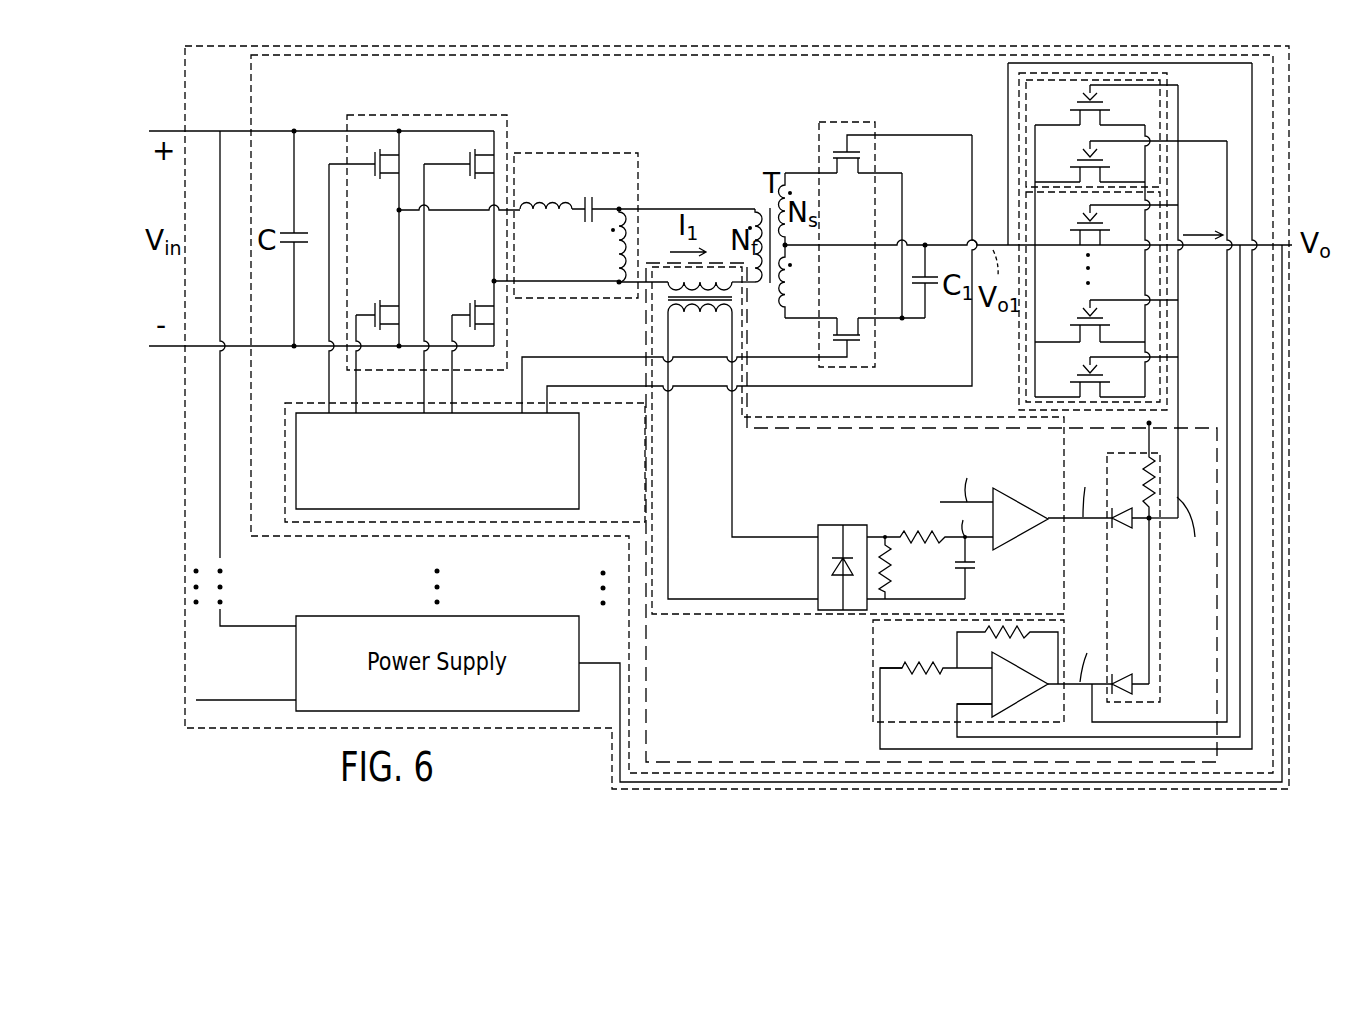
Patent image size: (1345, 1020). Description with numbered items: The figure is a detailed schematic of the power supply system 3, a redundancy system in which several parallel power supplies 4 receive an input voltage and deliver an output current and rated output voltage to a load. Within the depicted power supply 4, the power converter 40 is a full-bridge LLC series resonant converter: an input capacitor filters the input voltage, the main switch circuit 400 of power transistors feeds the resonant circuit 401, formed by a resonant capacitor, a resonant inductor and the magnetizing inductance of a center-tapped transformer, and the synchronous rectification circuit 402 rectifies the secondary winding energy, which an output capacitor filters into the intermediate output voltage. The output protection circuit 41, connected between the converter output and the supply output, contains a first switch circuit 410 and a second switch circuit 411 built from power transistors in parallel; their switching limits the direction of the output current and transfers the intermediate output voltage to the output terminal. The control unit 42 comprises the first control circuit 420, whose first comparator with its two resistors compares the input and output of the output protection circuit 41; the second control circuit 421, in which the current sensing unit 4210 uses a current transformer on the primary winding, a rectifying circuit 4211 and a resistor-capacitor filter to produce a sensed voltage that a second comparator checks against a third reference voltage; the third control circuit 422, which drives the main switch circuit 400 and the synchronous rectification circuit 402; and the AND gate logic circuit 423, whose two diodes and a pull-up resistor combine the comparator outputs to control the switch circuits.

The power supply system 3 is at (1328, 76).
The power supply 4 is at (567, 538).
The power converter 40 is at (692, 147).
The main switch circuit 400 is at (430, 113).
The resonant circuit 401 is at (578, 150).
The synchronous rectification circuit 402 is at (847, 120).
The output protection circuit 41 is at (1020, 95).
The first switch circuit 410 is at (1025, 133).
The second switch circuit 411 is at (1163, 198).
The control unit 42 is at (302, 402).
The first control circuit 420 is at (872, 668).
The second control circuit 421 is at (750, 615).
The third control circuit 422 is at (582, 467).
The AND gate logic circuit 423 is at (1160, 627).
The current sensing unit 4210 is at (762, 516).
The rectifying circuit 4211 is at (842, 525).